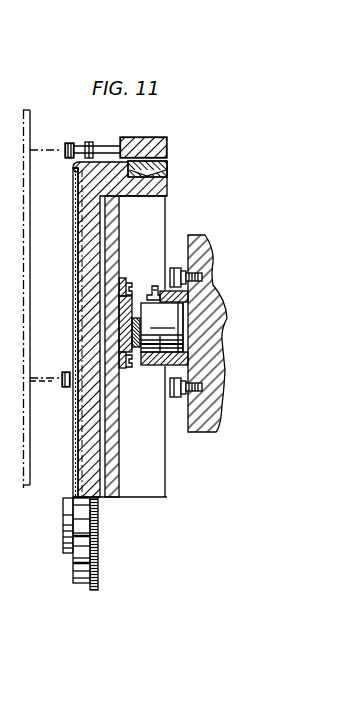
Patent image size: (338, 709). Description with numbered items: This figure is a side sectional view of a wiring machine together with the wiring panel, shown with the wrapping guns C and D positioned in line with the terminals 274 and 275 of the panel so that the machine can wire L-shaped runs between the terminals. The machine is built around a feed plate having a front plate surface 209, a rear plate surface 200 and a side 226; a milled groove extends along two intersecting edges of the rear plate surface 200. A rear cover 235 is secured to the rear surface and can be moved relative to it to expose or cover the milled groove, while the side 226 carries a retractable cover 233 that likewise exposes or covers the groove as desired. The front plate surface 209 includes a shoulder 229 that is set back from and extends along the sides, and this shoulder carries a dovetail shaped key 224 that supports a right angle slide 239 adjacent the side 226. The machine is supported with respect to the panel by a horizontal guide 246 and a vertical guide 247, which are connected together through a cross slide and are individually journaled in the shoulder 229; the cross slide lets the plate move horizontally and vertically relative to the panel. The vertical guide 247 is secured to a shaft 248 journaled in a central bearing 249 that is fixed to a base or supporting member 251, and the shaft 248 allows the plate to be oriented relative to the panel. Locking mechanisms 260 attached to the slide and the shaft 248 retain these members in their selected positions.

The rear plate surface 200 is at (73, 182).
The front plate surface 209 is at (103, 480).
The dovetail shaped key 224 is at (167, 173).
The side 226 is at (141, 140).
The shoulder 229 is at (150, 198).
The retractable cover 233 is at (93, 158).
The rear cover 235 is at (73, 219).
The right angle slide 239 is at (216, 151).
The horizontal guide 246 is at (143, 360).
The vertical guide 247 is at (115, 238).
The shaft 248 is at (157, 343).
The central bearing 249 is at (168, 364).
The base or supporting member 251 is at (188, 242).
The locking mechanisms 260 is at (155, 288).
The terminal 274 is at (42, 148).
The terminal 275 is at (40, 386).
The wrapping gun C is at (71, 146).
The wrapping gun D is at (63, 374).